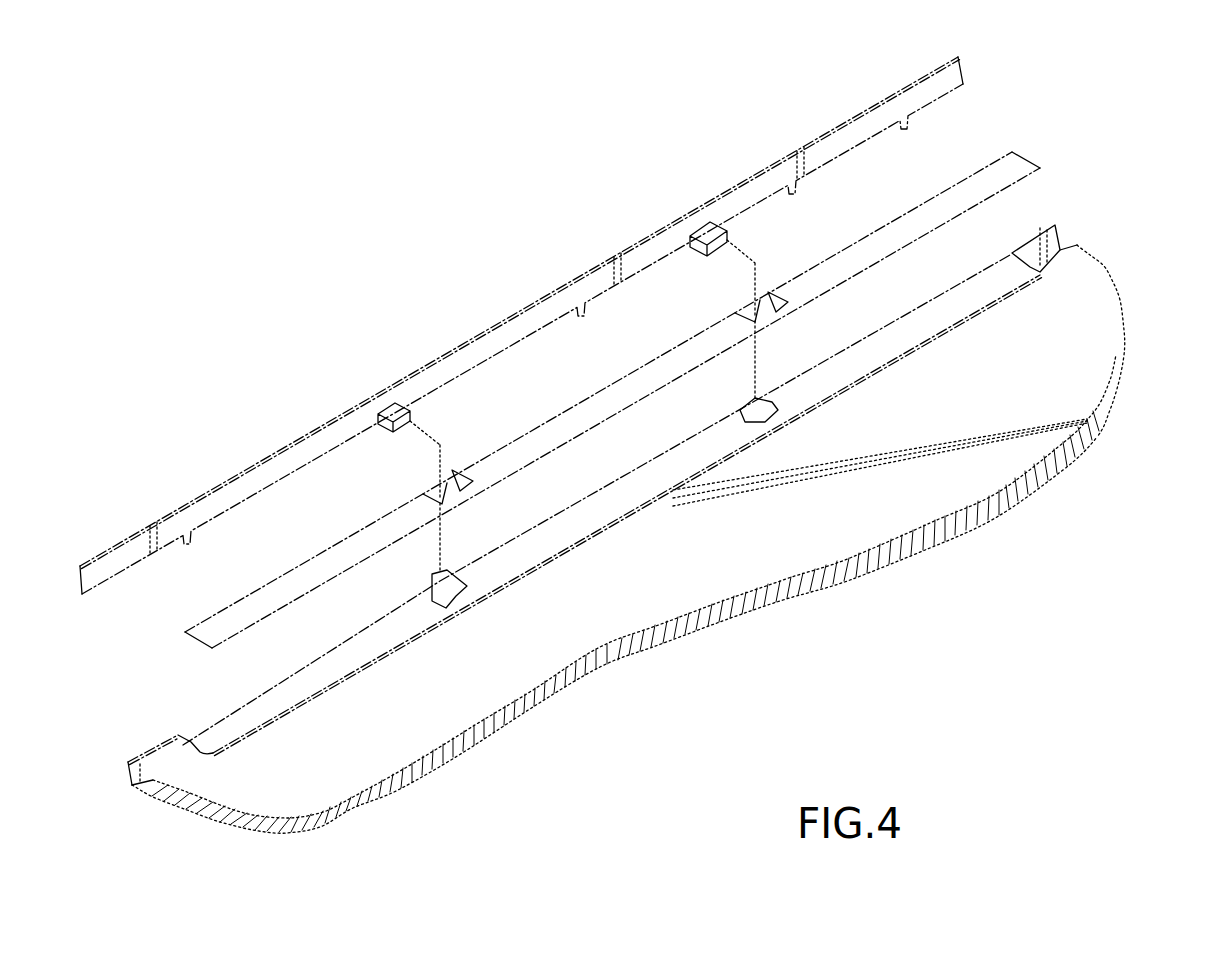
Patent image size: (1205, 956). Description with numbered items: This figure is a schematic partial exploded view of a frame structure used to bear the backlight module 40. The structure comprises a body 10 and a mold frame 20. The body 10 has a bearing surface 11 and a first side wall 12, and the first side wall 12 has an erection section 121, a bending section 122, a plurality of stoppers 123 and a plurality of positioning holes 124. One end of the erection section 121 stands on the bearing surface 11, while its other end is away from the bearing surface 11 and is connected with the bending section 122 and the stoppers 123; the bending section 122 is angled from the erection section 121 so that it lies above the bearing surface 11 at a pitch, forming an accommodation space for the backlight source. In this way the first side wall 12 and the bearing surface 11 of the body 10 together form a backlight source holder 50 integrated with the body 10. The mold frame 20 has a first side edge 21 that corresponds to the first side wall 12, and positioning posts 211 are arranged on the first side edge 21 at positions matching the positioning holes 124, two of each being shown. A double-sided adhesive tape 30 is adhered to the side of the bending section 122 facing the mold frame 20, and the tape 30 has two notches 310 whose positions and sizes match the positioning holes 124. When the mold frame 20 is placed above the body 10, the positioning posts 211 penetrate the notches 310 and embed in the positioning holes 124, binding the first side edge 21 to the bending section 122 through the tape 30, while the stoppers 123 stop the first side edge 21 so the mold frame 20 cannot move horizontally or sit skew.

The body 10 is at (649, 543).
The bearing surface 11 is at (157, 777).
The first side wall 12 is at (607, 518).
The erection section 121 is at (170, 753).
The bending section 122 is at (343, 667).
The stoppers 123 is at (450, 570).
The positioning holes 124 is at (437, 597).
The mold frame 20 is at (521, 325).
The first side edge 21 is at (770, 194).
The positioning posts 211 is at (412, 421).
The double-sided adhesive tape 30 is at (644, 368).
The notches 310 is at (763, 306).
The backlight module 40 is at (1105, 292).
The backlight source holder 50 is at (622, 543).